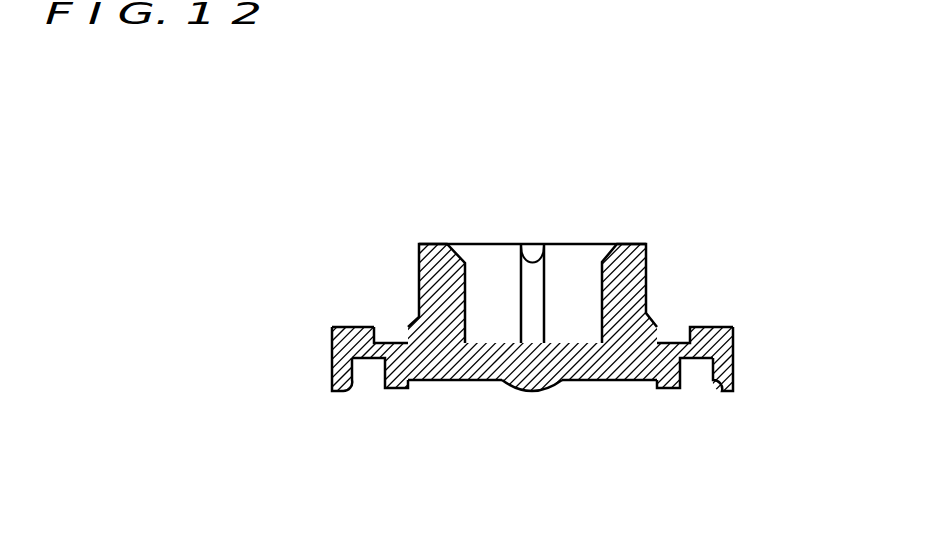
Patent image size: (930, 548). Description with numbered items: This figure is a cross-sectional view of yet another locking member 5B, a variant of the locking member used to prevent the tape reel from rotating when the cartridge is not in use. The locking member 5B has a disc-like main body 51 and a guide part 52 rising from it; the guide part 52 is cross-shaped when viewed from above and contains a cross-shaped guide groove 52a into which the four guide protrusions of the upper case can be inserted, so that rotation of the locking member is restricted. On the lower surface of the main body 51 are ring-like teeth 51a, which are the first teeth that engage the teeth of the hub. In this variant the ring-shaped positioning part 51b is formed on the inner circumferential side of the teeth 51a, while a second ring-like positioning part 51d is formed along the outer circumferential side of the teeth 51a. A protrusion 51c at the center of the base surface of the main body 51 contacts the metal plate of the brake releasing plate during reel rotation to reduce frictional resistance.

The locking member 5B is at (554, 188).
The main body 51 is at (733, 348).
The teeth 51a is at (367, 367).
The positioning part 51b is at (403, 388).
The protrusion 51c is at (535, 389).
The positioning part 51d is at (332, 380).
The guide part 52 is at (647, 285).
The guide groove 52a is at (489, 299).